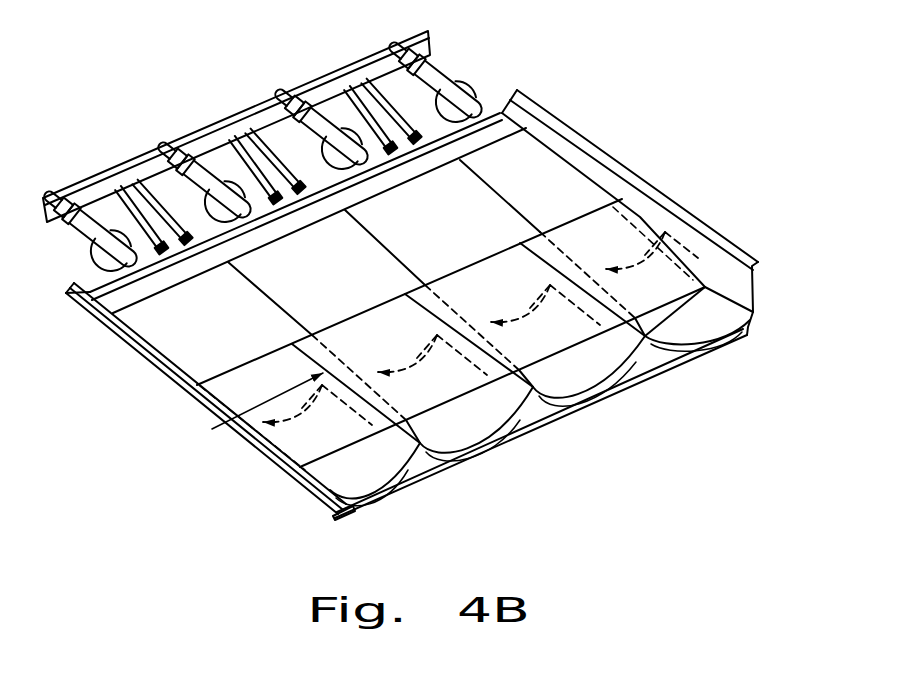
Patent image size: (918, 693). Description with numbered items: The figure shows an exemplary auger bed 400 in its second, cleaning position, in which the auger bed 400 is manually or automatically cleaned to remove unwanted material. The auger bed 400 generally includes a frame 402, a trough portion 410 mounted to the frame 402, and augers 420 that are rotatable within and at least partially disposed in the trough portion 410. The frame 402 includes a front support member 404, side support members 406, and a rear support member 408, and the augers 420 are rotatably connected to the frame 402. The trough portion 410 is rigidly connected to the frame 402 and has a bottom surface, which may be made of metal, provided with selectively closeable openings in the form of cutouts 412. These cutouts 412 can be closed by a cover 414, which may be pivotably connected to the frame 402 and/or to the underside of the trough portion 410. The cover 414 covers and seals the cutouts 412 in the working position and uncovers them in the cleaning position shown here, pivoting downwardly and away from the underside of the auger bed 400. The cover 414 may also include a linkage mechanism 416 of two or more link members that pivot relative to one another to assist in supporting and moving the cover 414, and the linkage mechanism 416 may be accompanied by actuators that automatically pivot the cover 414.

The auger bed 400 is at (698, 172).
The frame 402 is at (688, 235).
The front support member 404 is at (652, 357).
The side support members 406 is at (602, 173).
The rear support member 408 is at (333, 76).
The trough portion 410 is at (173, 345).
The cutouts 412 is at (467, 440).
The cover 414 is at (260, 430).
The linkage mechanism 416 is at (245, 412).
The augers 420 is at (453, 88).